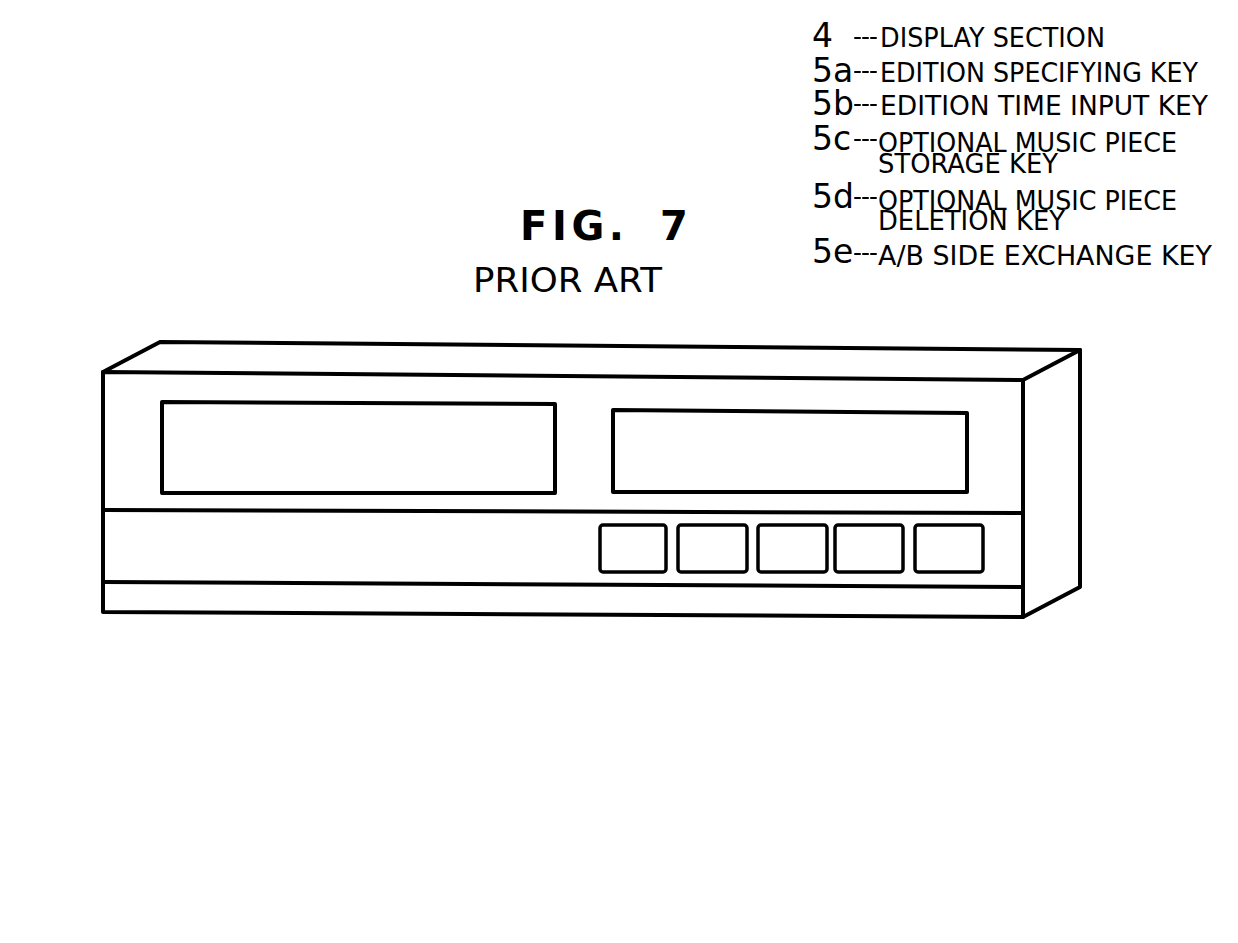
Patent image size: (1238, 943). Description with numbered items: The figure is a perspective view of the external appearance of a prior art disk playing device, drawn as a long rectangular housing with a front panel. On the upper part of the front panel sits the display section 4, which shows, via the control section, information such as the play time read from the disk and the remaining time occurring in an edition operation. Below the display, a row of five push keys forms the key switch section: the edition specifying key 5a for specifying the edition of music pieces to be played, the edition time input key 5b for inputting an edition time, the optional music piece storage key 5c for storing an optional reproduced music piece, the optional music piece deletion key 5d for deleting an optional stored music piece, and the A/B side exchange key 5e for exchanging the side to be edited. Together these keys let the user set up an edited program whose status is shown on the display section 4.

The display section 4 is at (742, 412).
The edition specifying key 5a is at (970, 573).
The edition time input key 5b is at (880, 573).
The optional music piece storage key 5c is at (792, 572).
The optional music piece deletion key 5d is at (706, 572).
The A/B side exchange key 5e is at (605, 572).